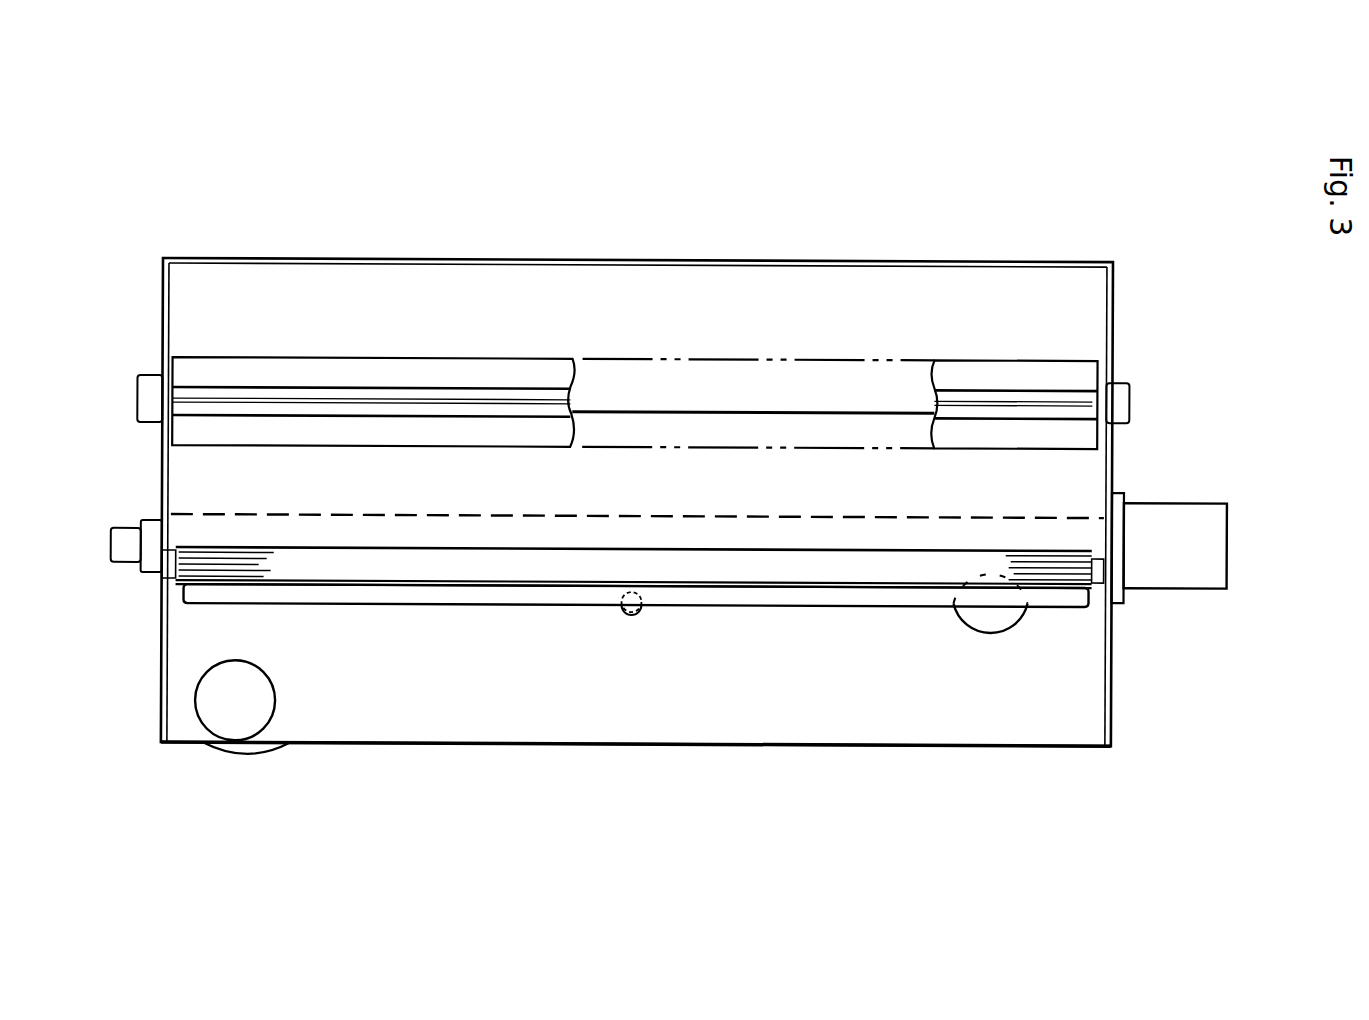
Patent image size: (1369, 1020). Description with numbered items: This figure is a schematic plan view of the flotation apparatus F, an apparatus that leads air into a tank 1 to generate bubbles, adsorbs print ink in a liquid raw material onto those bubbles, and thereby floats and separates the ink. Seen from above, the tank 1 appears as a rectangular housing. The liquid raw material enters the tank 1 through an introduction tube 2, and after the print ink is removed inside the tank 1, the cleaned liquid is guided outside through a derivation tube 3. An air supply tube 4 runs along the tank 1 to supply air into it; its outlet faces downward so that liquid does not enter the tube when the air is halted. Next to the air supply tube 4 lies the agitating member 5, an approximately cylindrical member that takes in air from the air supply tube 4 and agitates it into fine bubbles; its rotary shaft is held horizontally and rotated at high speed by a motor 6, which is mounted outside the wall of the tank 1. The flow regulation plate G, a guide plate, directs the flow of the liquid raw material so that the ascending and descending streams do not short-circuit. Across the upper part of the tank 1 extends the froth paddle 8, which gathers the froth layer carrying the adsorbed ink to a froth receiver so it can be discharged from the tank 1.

The tank 1 is at (705, 262).
The introduction tube 2 is at (995, 613).
The derivation tube 3 is at (232, 703).
The air supply tube 4 is at (548, 595).
The agitating member 5 is at (283, 565).
The motor 6 is at (1180, 530).
The froth paddle 8 is at (447, 385).
The flow regulation plate G is at (777, 407).
The flotation apparatus F is at (1047, 198).